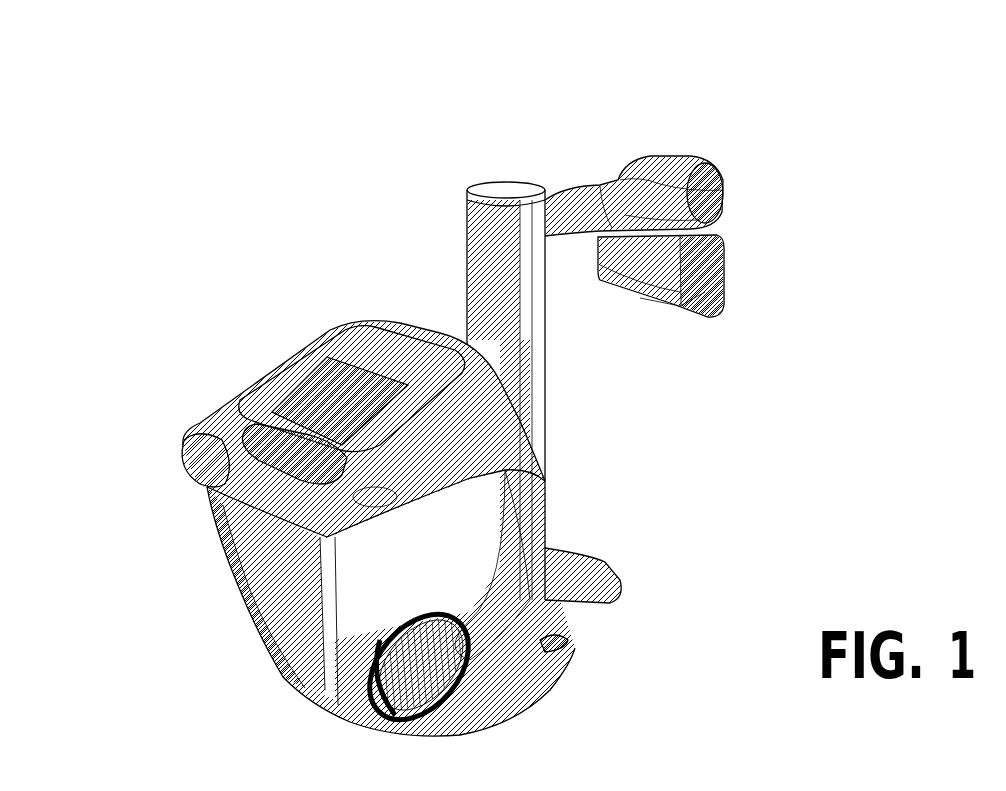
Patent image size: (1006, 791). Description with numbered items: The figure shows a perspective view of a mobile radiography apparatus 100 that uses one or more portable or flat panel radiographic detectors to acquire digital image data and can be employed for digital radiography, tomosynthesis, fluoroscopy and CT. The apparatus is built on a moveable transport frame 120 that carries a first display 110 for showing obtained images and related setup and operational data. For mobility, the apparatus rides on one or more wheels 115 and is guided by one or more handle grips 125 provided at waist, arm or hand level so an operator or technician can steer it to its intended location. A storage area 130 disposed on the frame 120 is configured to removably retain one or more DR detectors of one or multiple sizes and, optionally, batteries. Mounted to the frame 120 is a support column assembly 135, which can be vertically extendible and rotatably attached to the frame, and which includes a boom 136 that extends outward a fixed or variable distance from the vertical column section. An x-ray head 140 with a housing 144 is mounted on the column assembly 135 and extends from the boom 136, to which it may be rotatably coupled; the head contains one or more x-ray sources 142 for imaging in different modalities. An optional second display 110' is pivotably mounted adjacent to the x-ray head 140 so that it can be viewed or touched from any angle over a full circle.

The mobile radiography apparatus 100 is at (214, 201).
The first display 110 is at (364, 430).
The second display 110' is at (730, 276).
The wheels 115 is at (460, 697).
The moveable transport frame 120 is at (448, 546).
The handle grips 125 is at (204, 482).
The storage area 130 is at (282, 594).
The column assembly 135 is at (585, 113).
The boom 136 is at (597, 180).
The x-ray head 140 is at (740, 152).
The x-ray sources 142 is at (673, 303).
The housing 144 is at (694, 160).